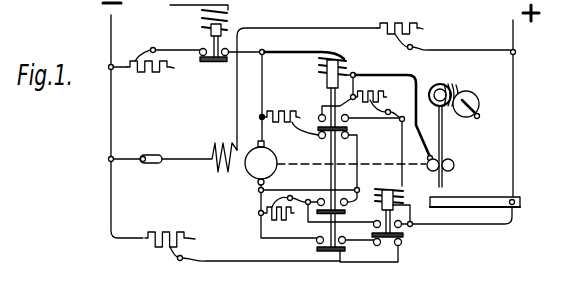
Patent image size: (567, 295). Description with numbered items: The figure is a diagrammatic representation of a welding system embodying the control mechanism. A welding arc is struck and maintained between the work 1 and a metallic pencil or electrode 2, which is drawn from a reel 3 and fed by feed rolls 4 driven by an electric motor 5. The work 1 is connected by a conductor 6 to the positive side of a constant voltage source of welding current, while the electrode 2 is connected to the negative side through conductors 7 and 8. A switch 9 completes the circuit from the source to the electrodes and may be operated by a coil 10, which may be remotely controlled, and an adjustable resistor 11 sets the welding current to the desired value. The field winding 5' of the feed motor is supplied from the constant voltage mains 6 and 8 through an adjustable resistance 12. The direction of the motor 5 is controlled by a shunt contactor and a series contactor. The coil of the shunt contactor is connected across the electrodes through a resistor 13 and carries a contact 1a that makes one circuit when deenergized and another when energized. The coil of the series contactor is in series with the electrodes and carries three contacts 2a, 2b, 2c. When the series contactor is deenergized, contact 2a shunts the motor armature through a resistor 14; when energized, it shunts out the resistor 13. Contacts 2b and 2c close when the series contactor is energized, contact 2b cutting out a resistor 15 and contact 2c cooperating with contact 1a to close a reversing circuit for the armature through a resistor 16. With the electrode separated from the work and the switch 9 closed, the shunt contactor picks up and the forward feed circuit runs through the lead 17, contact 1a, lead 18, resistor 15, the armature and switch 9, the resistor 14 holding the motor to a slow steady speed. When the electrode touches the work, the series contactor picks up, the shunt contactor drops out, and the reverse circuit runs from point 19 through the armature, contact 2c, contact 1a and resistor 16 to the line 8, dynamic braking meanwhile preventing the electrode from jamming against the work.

The work 1 is at (472, 202).
The contact of shunt contactor #1 1a is at (403, 235).
The metallic pencil or electrode 2 is at (443, 149).
The contact of series contactor #2 2a is at (355, 131).
The contact of series contactor #2 2b is at (346, 212).
The contact of series contactor #2 2c is at (338, 253).
The reel 3 is at (473, 98).
The feed rolls 4 is at (454, 163).
The electric motor 5 is at (327, 189).
The field winding 5' is at (246, 100).
The conductor 6 is at (516, 104).
The conductor 7 is at (388, 73).
The conductor 8 is at (110, 32).
The switch 9 is at (209, 63).
The coil 10 is at (208, 31).
The adjustable resistor 11 is at (142, 72).
The resistance 12 is at (413, 25).
The resistor 13 is at (386, 95).
The resistor 14 is at (290, 108).
The resistor 15 is at (280, 219).
The resistor 16 is at (163, 236).
The lead 17 is at (458, 226).
The lead 18 is at (345, 222).
The point 19 is at (267, 50).